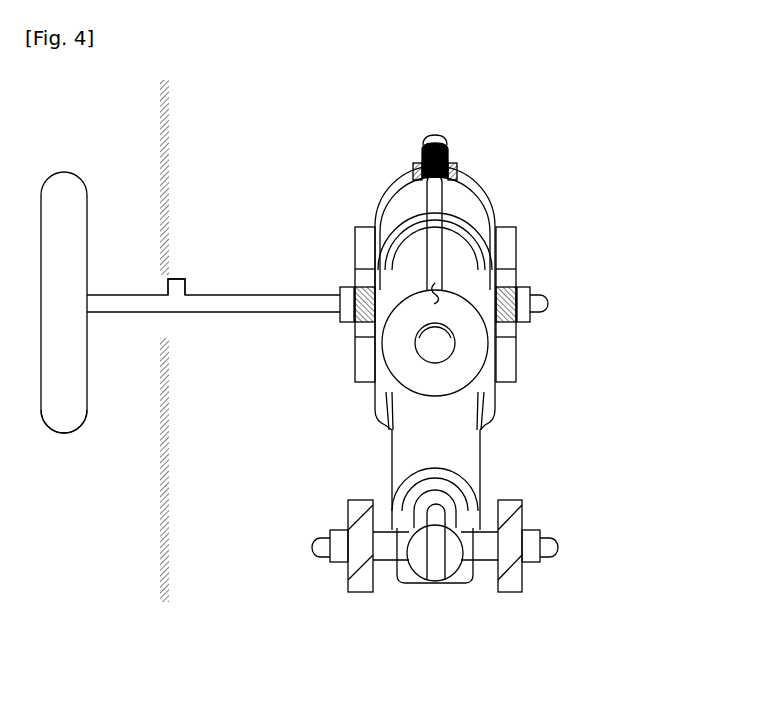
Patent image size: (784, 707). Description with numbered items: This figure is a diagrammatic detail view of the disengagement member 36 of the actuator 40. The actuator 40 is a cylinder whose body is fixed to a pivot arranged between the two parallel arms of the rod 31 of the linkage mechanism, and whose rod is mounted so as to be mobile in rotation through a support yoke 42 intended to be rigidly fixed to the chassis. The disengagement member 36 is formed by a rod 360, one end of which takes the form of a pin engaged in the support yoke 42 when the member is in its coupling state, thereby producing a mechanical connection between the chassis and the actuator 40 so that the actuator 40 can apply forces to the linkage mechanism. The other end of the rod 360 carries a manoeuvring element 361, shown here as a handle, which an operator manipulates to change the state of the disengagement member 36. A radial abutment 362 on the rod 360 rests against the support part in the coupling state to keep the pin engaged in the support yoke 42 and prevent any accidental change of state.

The rod 31 is at (523, 580).
The disengagement member 36 is at (57, 146).
The actuator 40 is at (463, 448).
The support yoke 42 is at (357, 250).
The rod 360 is at (257, 312).
The manoeuvring element 361 is at (66, 420).
The radial abutment 362 is at (179, 279).